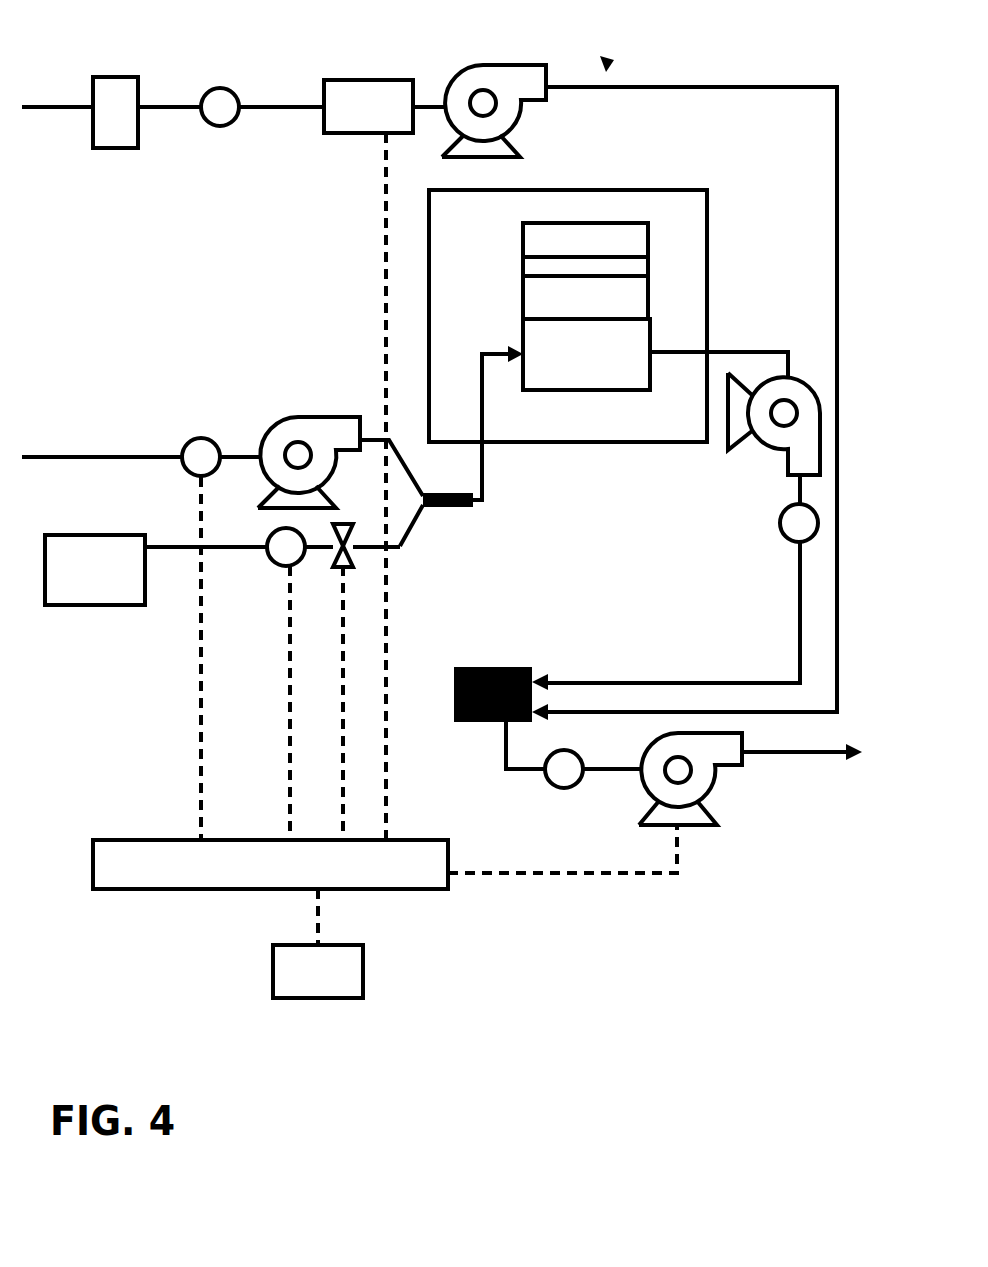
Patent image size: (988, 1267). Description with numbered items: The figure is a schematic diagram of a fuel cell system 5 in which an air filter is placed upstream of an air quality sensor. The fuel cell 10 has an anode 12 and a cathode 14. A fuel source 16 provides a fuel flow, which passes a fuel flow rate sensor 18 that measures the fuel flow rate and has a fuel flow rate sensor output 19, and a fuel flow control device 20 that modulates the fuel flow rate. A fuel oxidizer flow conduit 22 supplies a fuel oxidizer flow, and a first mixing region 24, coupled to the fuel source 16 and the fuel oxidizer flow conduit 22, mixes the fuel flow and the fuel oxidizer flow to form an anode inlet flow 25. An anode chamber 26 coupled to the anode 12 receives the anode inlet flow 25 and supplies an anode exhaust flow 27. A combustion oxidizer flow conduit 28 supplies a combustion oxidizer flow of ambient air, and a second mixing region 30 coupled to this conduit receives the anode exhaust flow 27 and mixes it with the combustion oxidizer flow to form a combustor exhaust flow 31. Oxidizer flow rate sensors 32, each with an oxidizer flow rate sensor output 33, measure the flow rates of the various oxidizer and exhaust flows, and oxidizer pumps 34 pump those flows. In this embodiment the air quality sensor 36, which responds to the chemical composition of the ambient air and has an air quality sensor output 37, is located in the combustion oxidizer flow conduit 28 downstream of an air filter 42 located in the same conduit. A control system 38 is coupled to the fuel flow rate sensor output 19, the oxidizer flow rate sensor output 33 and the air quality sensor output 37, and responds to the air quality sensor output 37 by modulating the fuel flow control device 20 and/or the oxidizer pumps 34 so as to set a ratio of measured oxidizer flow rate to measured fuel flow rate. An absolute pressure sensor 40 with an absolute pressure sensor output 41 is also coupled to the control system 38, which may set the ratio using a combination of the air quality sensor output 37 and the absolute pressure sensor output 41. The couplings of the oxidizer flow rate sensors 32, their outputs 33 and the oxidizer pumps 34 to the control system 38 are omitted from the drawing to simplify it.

The fuel cell system 5 is at (606, 68).
The fuel cell 10 is at (557, 190).
The anode 12 is at (620, 300).
The cathode 14 is at (600, 236).
The fuel source 16 is at (99, 607).
The fuel flow rate sensor 18 is at (272, 570).
The fuel flow rate sensor output 19 is at (295, 572).
The fuel flow control device 20 is at (362, 565).
The fuel oxidizer flow conduit 22 is at (47, 456).
The first mixing region 24 is at (465, 510).
The anode inlet flow 25 is at (488, 473).
The anode chamber 26 is at (575, 392).
The anode exhaust flow 27 is at (790, 604).
The combustion oxidizer flow conduit 28 is at (163, 105).
The second mixing region 30 is at (497, 665).
The combustor exhaust flow 31 is at (504, 775).
The oxidizer flow rate sensor 32 is at (219, 128).
The oxidizer flow rate sensor output 33 is at (198, 479).
The oxidizer pump 34 is at (484, 80).
The air quality sensor 36 is at (338, 78).
The air quality sensor output 37 is at (380, 143).
The control system 38 is at (425, 889).
The absolute pressure sensor 40 is at (363, 975).
The absolute pressure sensor output 41 is at (310, 938).
The air filter 42 is at (116, 112).